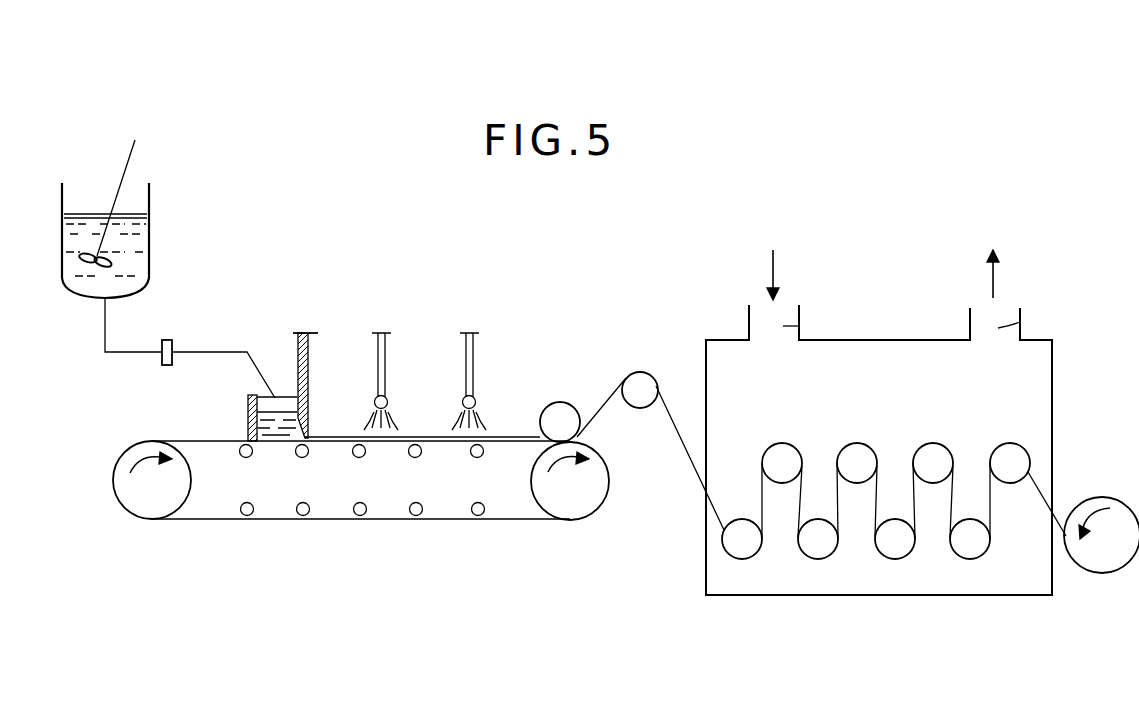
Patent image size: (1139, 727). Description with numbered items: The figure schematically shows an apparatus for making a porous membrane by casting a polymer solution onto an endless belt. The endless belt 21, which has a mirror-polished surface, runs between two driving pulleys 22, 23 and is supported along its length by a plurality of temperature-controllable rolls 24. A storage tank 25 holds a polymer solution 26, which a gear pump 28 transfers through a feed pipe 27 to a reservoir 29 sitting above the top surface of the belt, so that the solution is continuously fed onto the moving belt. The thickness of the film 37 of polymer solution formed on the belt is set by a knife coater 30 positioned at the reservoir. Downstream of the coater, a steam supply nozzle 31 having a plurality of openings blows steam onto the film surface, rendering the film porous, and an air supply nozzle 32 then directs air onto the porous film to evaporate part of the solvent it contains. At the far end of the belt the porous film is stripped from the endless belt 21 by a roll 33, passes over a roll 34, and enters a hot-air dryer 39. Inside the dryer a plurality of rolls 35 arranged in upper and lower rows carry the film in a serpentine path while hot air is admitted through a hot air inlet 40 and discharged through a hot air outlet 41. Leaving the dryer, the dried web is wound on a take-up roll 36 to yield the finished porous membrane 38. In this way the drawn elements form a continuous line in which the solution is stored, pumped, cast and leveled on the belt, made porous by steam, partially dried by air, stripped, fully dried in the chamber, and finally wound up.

The endless belt 21 is at (207, 519).
The driving pulley 22 is at (150, 506).
The driving pulley 23 is at (586, 500).
The temperature-controllable rolls 24 is at (250, 456).
The storage tank 25 is at (150, 206).
The polymer solution 26 is at (130, 262).
The feed pipe 27 is at (238, 352).
The gear pump 28 is at (168, 340).
The reservoir / dam 29 is at (250, 398).
The knife coater 30 is at (308, 358).
The steam supply nozzle 31 is at (387, 400).
The air supply nozzle 32 is at (475, 400).
The roll 33 is at (555, 418).
The roll 34 is at (638, 386).
The rolls 35 is at (856, 458).
The take-up roll 36 is at (1105, 556).
The film 37 is at (330, 437).
The porous membrane 38 is at (690, 432).
The hot-air dryer 39 is at (1052, 403).
The hot air inlet 40 is at (800, 326).
The hot air outlet 41 is at (1020, 322).